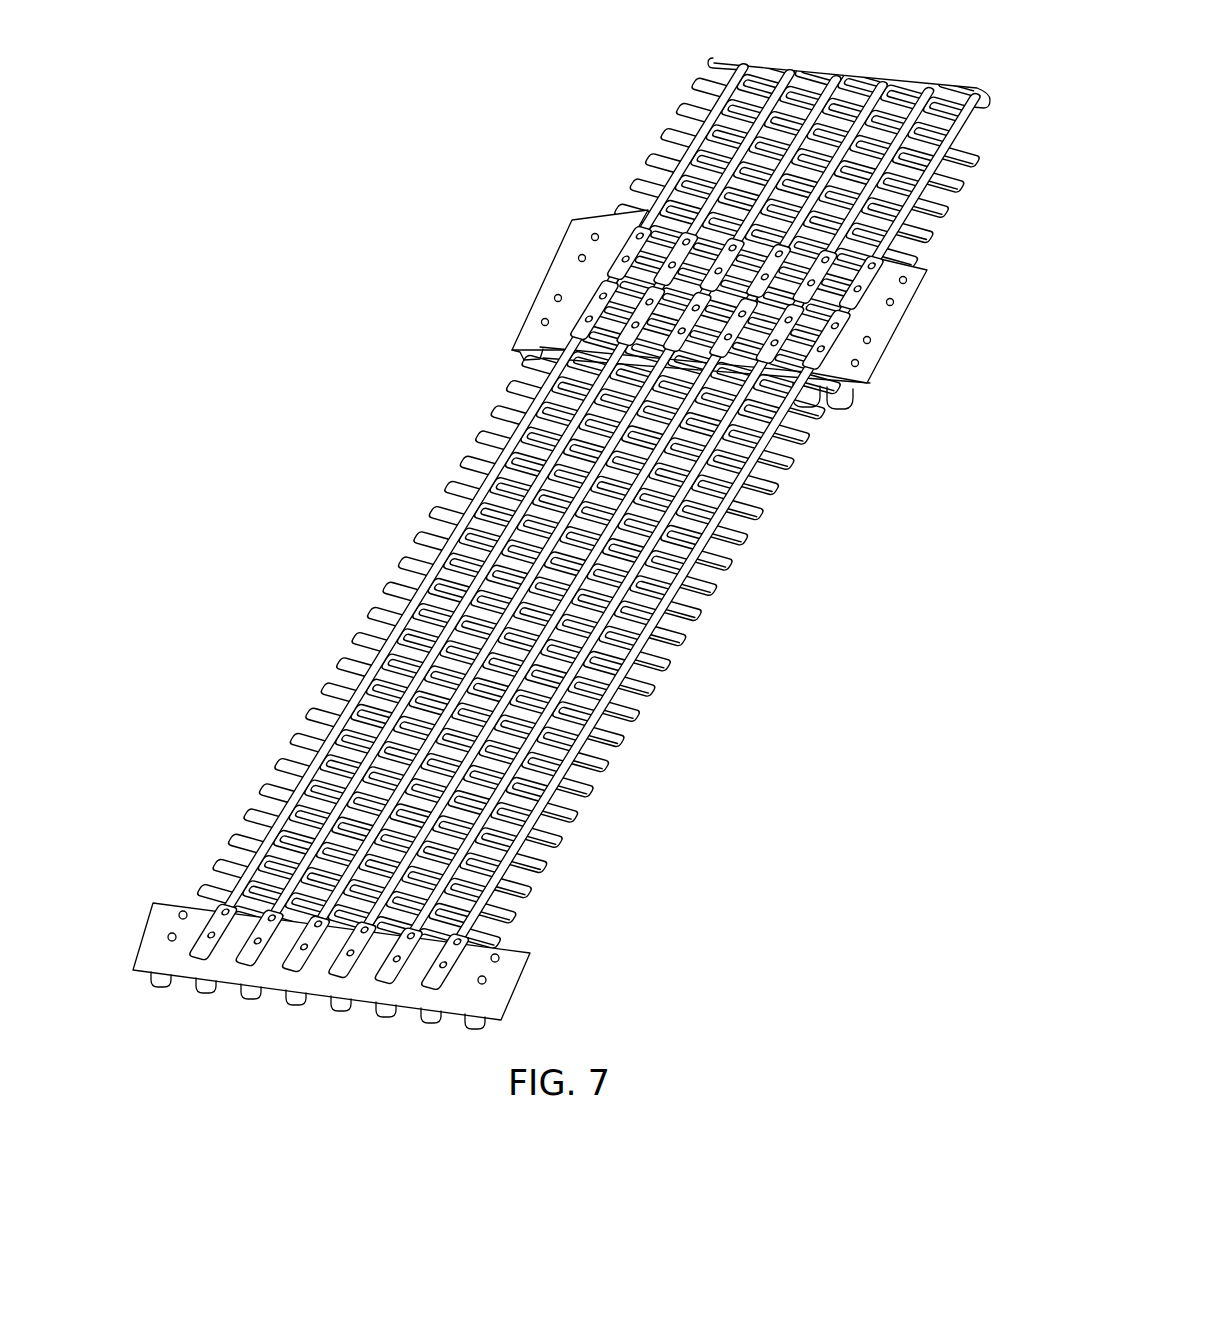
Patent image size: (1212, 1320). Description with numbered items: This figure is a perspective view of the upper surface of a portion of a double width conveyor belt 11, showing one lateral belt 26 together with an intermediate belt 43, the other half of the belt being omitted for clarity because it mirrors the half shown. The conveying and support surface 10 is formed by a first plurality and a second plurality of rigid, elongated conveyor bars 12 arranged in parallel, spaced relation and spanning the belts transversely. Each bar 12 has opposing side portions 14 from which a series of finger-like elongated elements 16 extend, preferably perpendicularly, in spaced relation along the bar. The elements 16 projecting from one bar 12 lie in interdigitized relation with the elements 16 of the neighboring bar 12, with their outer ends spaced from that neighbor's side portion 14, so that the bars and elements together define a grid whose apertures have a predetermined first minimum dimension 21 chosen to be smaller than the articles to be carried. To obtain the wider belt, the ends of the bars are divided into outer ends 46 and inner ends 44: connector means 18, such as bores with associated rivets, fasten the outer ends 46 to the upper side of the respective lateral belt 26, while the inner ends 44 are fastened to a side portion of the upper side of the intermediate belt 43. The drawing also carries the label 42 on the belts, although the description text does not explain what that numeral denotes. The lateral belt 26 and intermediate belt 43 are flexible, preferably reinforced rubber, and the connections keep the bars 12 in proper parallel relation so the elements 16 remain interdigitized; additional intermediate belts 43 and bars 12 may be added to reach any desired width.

The conveying and support surface 10 is at (752, 72).
The conveyor belt 11 is at (270, 550).
The conveyor bar 12 is at (918, 78).
The side portion 14 is at (934, 170).
The elongated element 16 is at (985, 100).
The connector means 18 is at (586, 318).
The first minimum dimension 21 is at (342, 767).
The lateral belt 26 is at (506, 975).
The plate tab 42 is at (848, 400).
The intermediate belt 43 is at (548, 276).
The inner end 44 is at (610, 256).
The outer end 46 is at (216, 920).